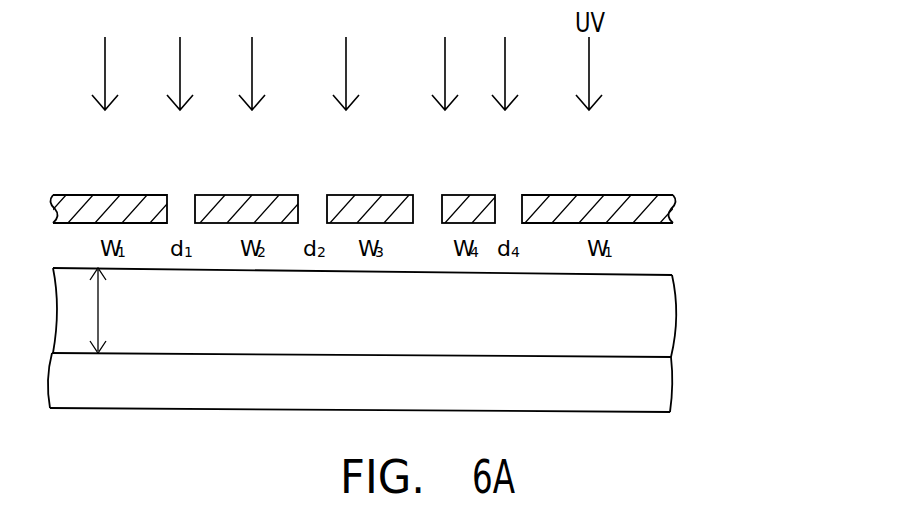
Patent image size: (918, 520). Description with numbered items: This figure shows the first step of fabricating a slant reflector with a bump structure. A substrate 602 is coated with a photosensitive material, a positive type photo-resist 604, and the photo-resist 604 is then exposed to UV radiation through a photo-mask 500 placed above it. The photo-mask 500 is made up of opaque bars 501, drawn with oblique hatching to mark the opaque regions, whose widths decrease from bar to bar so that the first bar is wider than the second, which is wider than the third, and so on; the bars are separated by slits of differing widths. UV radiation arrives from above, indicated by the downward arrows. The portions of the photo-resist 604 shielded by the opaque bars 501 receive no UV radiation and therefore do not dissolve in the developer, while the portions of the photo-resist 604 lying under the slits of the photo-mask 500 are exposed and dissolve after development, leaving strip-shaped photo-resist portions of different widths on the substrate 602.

The photo-mask 500 is at (673, 211).
The opaque bars 501 is at (468, 195).
The positive type photo-resist 604 is at (660, 320).
The substrate 602 is at (660, 388).